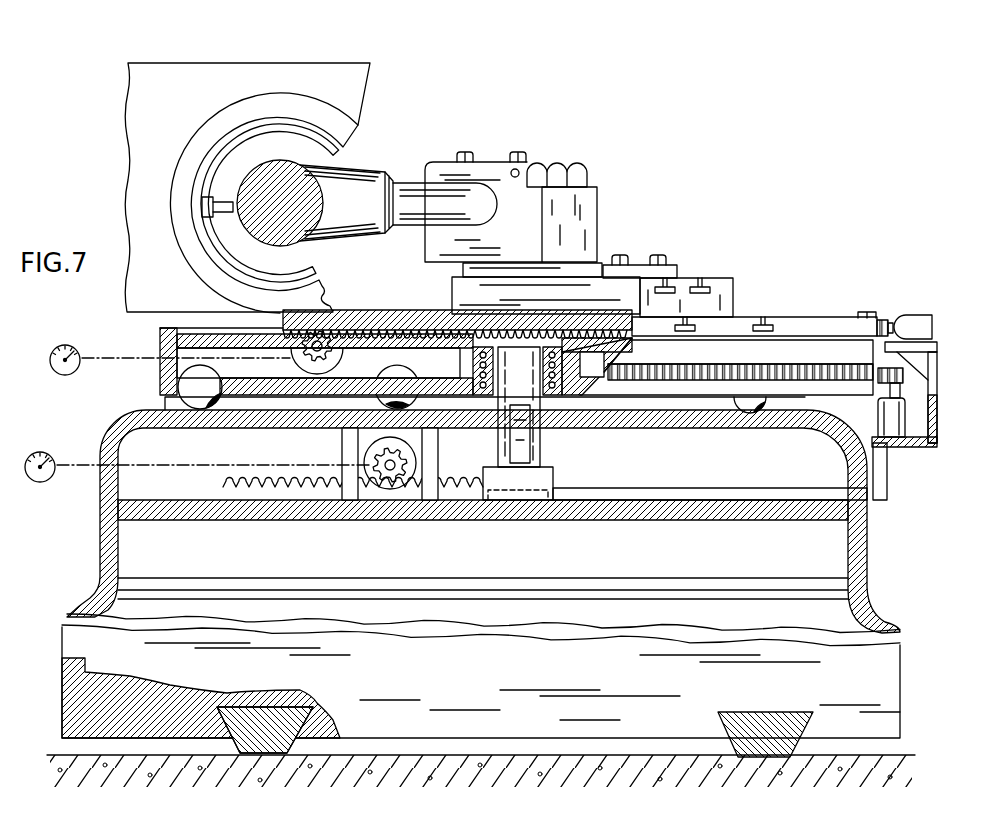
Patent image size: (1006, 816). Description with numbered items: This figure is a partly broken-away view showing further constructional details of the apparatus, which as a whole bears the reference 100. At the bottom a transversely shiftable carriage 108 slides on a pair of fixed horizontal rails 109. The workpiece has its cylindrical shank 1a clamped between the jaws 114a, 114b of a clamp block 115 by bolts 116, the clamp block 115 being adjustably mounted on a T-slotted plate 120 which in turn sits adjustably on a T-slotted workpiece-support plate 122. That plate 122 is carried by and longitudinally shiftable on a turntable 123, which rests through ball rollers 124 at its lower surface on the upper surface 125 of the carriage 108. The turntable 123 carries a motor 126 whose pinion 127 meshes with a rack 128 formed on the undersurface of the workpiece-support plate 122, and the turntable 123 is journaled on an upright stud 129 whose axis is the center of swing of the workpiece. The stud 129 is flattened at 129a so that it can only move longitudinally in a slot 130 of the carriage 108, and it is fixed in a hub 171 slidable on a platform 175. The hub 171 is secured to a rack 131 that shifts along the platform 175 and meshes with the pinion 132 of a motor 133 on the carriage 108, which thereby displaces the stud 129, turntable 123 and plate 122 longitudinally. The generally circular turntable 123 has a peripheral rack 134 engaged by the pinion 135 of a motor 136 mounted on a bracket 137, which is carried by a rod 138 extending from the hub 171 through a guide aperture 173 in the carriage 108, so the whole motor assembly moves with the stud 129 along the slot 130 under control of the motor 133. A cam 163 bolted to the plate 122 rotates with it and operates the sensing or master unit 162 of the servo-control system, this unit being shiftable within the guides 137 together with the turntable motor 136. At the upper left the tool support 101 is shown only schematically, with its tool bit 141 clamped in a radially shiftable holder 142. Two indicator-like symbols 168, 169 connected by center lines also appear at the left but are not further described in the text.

The tool support 101 is at (323, 70).
The tool bit 141 is at (218, 197).
The tool holder 142 is at (210, 217).
The cylindrical shank 1a is at (480, 218).
The clamp block 115 is at (539, 193).
The jaw 114a is at (525, 170).
The jaw 114b is at (597, 221).
The bolts 116 is at (516, 152).
The plate 120 is at (733, 288).
The rack 128 is at (397, 313).
The turntable 123 is at (160, 333).
The motor 126 is at (290, 362).
The pinion 127 is at (333, 351).
The upright stud 129 is at (549, 413).
The flattened portion 129a is at (520, 458).
The hub 171 is at (553, 501).
The upper surface 125 is at (680, 411).
The ball rollers 124 is at (180, 397).
The slot 130 is at (632, 423).
The platform 175 is at (251, 519).
The rack 131 is at (227, 492).
The motor 133 is at (368, 454).
The pinion 132 is at (407, 459).
The gauge 169 is at (68, 345).
The gauge 168 is at (35, 453).
The workpiece-support plate 122 is at (790, 318).
The peripheral rack 134 is at (683, 372).
The cam 163 is at (870, 320).
The sensing unit 162 is at (913, 320).
The bracket 137 is at (932, 404).
The pinion 135 is at (905, 378).
The motor 136 is at (897, 427).
The guide aperture 173 is at (873, 510).
The rod 138 is at (700, 496).
The machine assembly 100 is at (792, 284).
The carriage 108 is at (900, 689).
The rails 109 is at (293, 707).